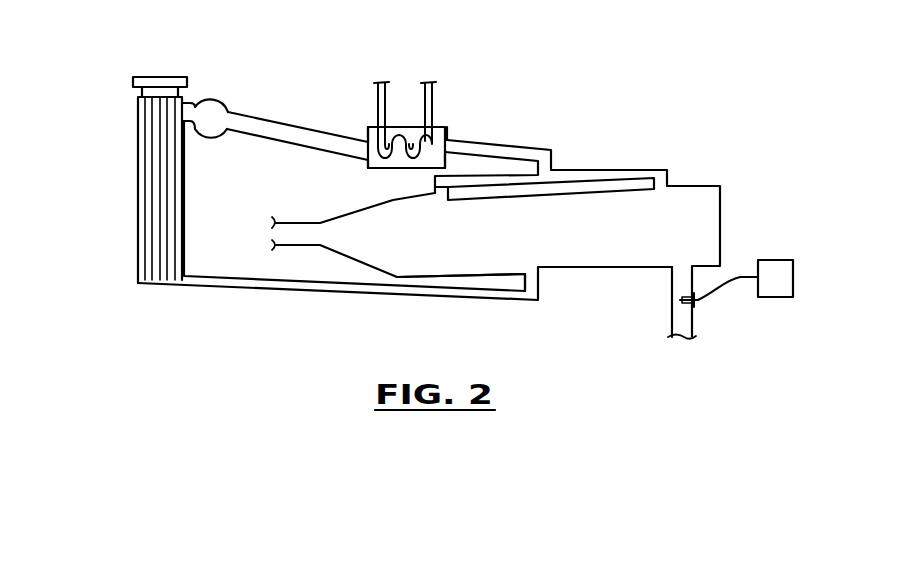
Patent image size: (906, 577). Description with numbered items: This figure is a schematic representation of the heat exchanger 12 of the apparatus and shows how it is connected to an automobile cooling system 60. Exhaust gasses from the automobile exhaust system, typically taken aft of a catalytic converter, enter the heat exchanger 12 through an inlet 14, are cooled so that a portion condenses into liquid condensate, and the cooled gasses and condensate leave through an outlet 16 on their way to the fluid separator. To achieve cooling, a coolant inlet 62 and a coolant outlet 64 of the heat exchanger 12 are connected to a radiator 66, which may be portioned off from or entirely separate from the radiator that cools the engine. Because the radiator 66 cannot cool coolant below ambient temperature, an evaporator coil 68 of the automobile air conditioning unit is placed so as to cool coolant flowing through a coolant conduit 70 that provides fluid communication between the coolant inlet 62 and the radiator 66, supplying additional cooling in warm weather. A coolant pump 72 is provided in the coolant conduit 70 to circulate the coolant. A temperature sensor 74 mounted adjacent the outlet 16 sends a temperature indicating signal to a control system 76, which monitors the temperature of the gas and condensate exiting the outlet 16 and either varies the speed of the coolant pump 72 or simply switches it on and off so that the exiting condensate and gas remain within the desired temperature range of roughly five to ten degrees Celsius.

The heat exchanger 12 is at (703, 185).
The inlet 14 is at (300, 232).
The outlet 16 is at (682, 266).
The automobile cooling system 60 is at (124, 182).
The coolant inlet 62 is at (441, 197).
The coolant outlet 64 is at (530, 273).
The radiator 66 is at (157, 77).
The evaporator coil 68 is at (440, 138).
The coolant conduit 70 is at (313, 131).
The coolant pump 72 is at (212, 99).
The temperature sensor 74 is at (687, 313).
The control system 76 is at (777, 287).